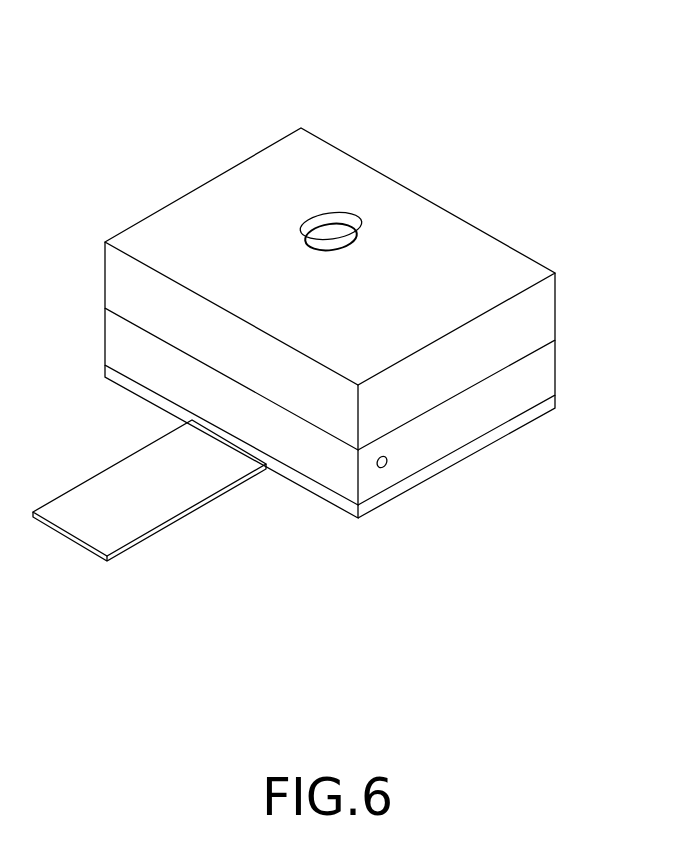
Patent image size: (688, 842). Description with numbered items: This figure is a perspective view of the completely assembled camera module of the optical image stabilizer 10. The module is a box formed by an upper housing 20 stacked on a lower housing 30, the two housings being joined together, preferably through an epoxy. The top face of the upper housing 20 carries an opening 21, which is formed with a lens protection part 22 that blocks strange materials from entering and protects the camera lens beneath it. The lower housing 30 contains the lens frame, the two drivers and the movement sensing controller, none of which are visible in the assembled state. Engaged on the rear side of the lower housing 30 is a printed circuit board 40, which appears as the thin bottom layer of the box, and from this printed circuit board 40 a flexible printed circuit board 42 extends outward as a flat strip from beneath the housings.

The optical image stabilizer 10 is at (473, 80).
The upper housing 20 is at (330, 258).
The opening 21 is at (308, 218).
The lens protection part 22 is at (332, 227).
The lower housing 30 is at (537, 377).
The printed circuit board 40 is at (477, 452).
The flexible printed circuit board 42 is at (148, 502).